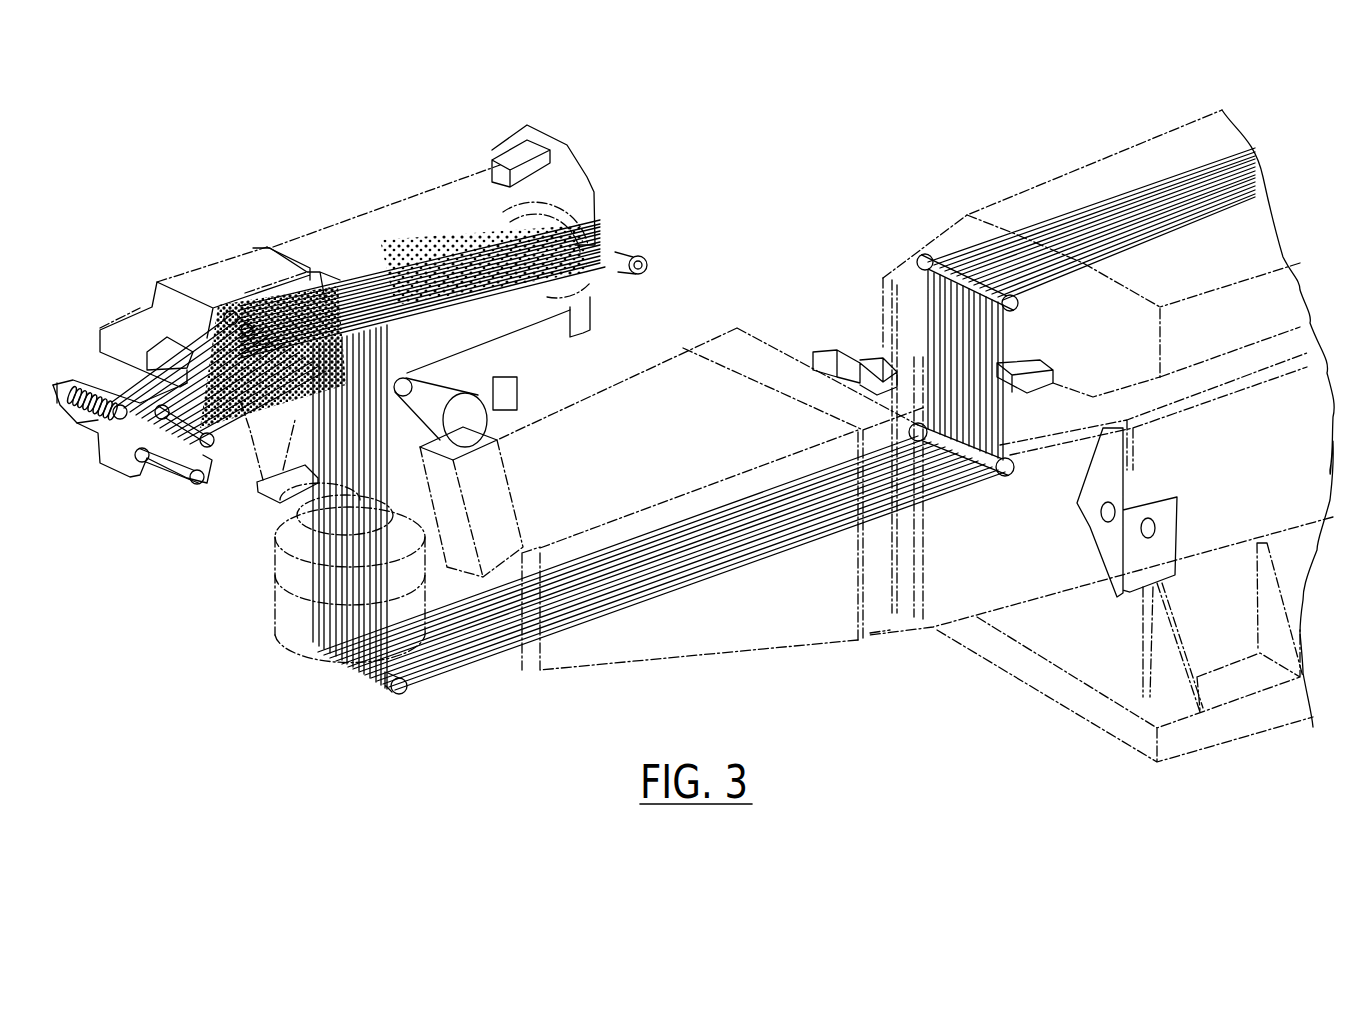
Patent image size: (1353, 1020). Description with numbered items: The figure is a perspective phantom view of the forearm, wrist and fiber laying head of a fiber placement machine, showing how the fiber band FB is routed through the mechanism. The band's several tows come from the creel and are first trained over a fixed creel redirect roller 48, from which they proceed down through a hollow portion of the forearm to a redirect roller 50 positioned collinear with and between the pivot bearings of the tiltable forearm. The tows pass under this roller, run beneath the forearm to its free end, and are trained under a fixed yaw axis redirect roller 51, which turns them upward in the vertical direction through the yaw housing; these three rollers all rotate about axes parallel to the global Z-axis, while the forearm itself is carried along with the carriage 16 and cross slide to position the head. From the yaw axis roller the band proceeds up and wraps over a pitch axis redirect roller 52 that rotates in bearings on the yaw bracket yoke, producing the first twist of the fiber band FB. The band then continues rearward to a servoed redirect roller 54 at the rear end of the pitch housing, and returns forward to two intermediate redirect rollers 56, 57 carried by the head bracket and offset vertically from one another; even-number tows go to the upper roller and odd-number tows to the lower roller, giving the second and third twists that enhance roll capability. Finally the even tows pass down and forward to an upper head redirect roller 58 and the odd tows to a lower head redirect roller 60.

The carriage 16 is at (122, 420).
The fixed creel redirect roller 48 is at (1013, 307).
The redirect roller 50 is at (1013, 472).
The fixed yaw axis redirect roller 51 is at (402, 686).
The pitch axis redirect roller 52 is at (450, 388).
The servoed redirect roller 54 is at (648, 266).
The intermediate redirect roller 56 is at (228, 315).
The intermediate redirect roller 57 is at (262, 440).
The upper head redirect roller 58 is at (188, 462).
The lower head redirect roller 60 is at (203, 473).
The fiber band FB is at (780, 548).